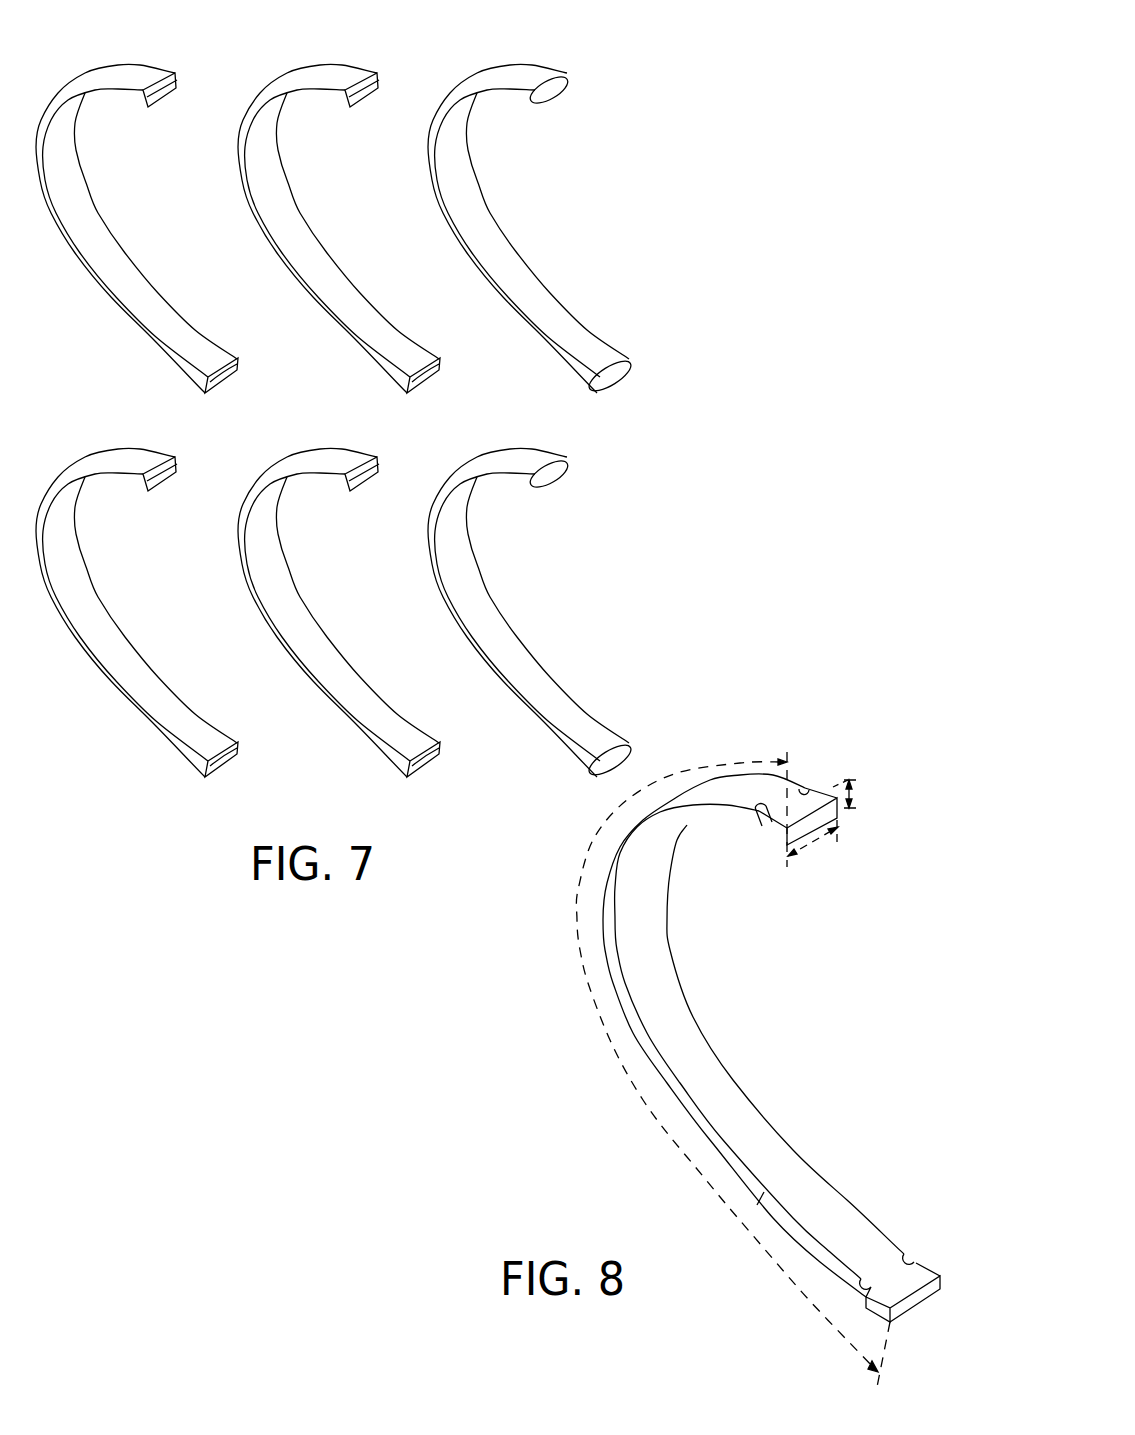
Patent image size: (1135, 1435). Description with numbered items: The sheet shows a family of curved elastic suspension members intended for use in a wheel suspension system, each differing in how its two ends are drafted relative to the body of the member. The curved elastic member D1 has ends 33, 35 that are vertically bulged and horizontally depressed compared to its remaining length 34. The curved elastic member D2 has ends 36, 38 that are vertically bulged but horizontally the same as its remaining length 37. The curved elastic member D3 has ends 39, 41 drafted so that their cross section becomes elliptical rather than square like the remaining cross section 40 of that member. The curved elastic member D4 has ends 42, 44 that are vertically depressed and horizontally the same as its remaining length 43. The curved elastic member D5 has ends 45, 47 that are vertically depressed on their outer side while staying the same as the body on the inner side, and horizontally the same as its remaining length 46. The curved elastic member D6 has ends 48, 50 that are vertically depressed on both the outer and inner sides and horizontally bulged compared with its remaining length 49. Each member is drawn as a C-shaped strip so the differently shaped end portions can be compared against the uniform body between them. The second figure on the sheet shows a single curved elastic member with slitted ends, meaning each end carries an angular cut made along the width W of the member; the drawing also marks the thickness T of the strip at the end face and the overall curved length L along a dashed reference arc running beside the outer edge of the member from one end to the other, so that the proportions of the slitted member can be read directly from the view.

In FIG. 7, the curved elastic member D1 is at (125, 62).
In FIG. 7, the curved elastic member D2 is at (327, 62).
In FIG. 7, the curved elastic member D3 is at (513, 62).
In FIG. 7, the curved elastic member D4 is at (123, 447).
In FIG. 7, the curved elastic member D5 is at (325, 447).
In FIG. 7, the curved elastic member D6 is at (515, 443).
In FIG. 7, the end 33 is at (140, 95).
In FIG. 7, the remaining length 34 is at (110, 263).
In FIG. 7, the end 35 is at (200, 378).
In FIG. 7, the end 36 is at (340, 97).
In FIG. 7, the remaining length 37 is at (298, 240).
In FIG. 7, the end 38 is at (400, 380).
In FIG. 7, the end 39 is at (527, 90).
In FIG. 7, the remaining cross section 40 is at (480, 230).
In FIG. 7, the end 41 is at (585, 375).
In FIG. 7, the end 42 is at (140, 480).
In FIG. 7, the remaining length 43 is at (90, 625).
In FIG. 7, the end 44 is at (200, 765).
In FIG. 7, the end 45 is at (345, 482).
In FIG. 7, the remaining length 46 is at (300, 615).
In FIG. 7, the end 47 is at (405, 765).
In FIG. 7, the end 48 is at (527, 477).
In FIG. 7, the remaining length 49 is at (480, 620).
In FIG. 7, the end 50 is at (587, 762).
In FIG. 8, the length of band L is at (711, 1069).
In FIG. 8, the thickness of band T is at (856, 796).
In FIG. 8, the width W is at (813, 854).